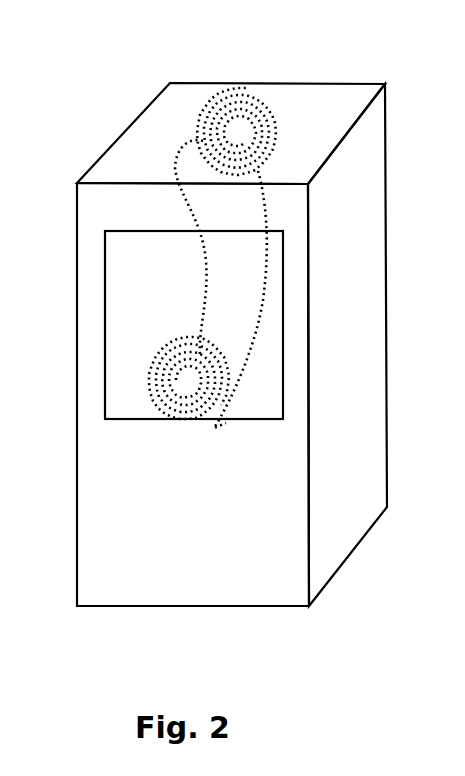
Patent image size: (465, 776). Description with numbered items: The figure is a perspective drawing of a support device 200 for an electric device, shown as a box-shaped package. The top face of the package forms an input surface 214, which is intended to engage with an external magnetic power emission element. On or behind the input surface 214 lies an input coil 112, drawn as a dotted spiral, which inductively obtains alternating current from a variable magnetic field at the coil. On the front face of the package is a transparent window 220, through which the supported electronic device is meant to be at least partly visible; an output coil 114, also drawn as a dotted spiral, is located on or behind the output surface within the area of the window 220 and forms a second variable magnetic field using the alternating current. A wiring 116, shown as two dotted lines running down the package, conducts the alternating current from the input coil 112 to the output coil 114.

The support device 200 is at (243, 316).
The input surface 214 is at (93, 97).
The input coil 112 is at (226, 100).
The output coil 114 is at (128, 378).
The wiring 116 is at (247, 313).
The transparent window 220 is at (282, 334).